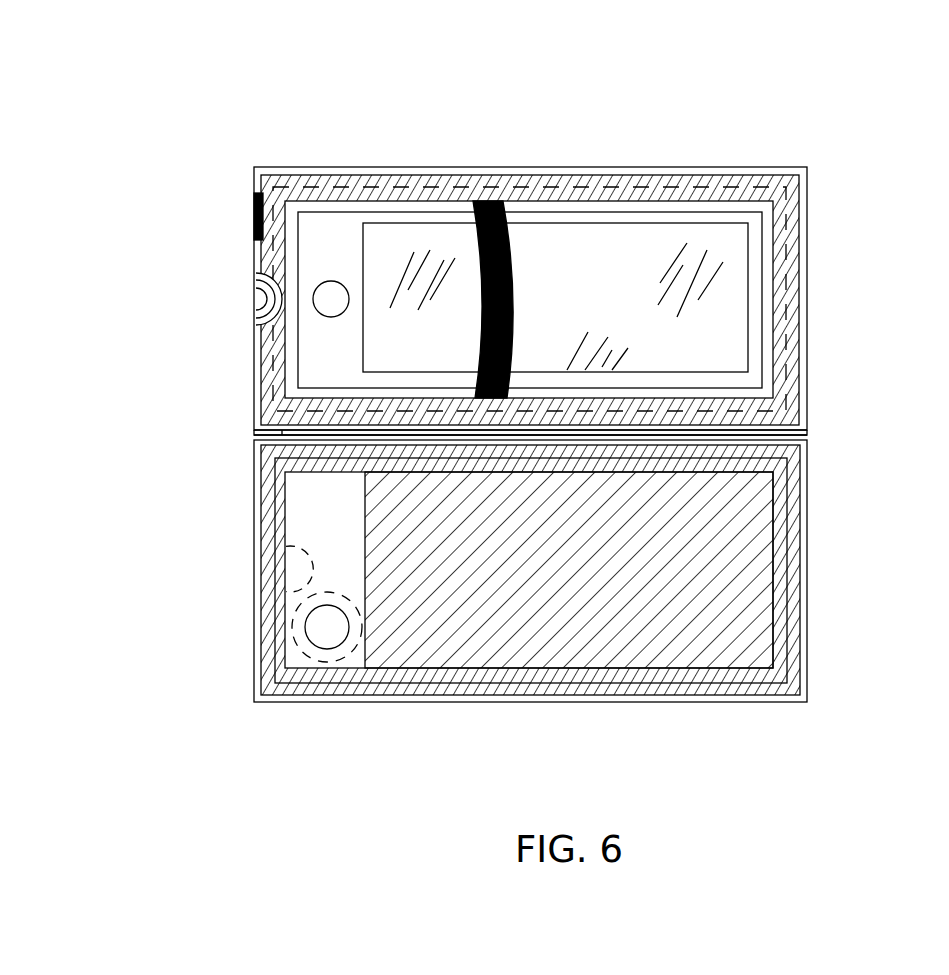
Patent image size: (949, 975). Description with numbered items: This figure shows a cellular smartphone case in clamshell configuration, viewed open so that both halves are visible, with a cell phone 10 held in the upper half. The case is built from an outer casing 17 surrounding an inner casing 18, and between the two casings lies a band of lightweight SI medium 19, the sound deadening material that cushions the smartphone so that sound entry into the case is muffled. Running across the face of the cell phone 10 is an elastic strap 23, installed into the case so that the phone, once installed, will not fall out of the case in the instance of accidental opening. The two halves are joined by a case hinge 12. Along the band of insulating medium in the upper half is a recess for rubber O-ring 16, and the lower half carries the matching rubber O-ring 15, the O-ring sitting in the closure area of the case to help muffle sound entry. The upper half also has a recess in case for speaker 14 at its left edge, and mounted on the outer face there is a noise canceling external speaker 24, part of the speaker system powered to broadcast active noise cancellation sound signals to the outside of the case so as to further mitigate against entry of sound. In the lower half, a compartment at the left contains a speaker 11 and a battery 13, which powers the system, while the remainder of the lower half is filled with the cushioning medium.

The Cell Phone 10 is at (602, 240).
The Speaker 11 is at (308, 562).
The Case Hinge 12 is at (780, 433).
The Battery 13 is at (325, 628).
The Recess In Case For Speaker 14 is at (255, 290).
The Rubber O-Ring 15 is at (380, 682).
The Recess For Rubber O-Ring 16 is at (462, 187).
The Outer Casing 17 is at (807, 253).
The Inner Casing 18 is at (805, 180).
The Lightweight SI Medium 19 is at (733, 178).
The Elastic Strap 23 is at (515, 265).
The Noise Canceling External Speaker 24 is at (253, 208).